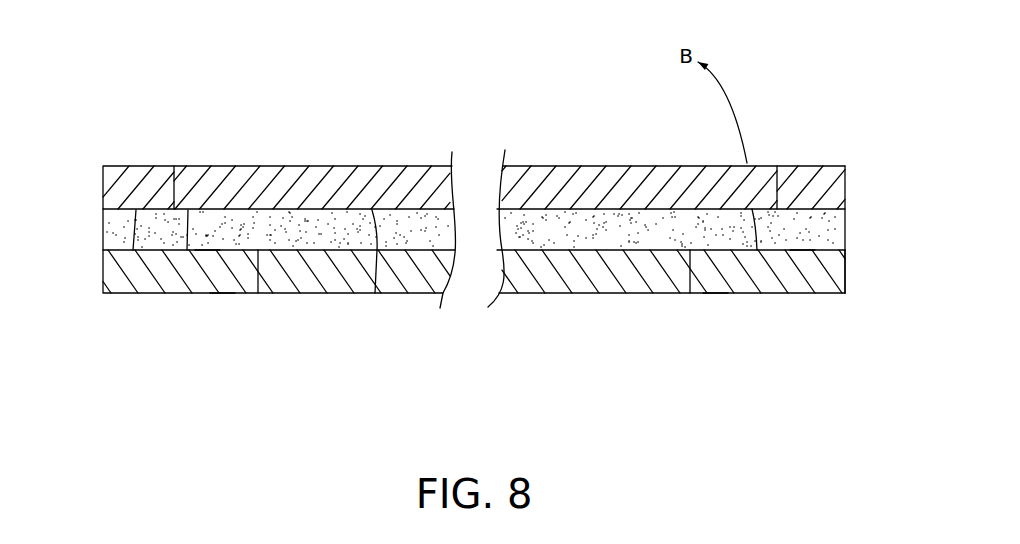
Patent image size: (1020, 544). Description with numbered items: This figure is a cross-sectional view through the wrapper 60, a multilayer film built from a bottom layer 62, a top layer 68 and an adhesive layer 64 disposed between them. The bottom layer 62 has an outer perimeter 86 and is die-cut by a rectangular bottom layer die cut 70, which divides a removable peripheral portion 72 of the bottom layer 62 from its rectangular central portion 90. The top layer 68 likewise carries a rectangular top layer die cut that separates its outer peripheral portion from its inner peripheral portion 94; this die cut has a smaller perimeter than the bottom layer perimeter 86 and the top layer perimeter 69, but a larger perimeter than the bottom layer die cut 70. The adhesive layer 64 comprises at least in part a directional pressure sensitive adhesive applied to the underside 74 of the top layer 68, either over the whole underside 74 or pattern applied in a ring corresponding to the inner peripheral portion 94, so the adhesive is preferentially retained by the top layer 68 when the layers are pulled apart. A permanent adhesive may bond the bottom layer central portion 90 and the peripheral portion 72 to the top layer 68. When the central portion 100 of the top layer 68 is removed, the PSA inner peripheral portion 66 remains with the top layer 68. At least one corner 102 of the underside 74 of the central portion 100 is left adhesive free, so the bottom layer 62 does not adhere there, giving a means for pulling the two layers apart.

The wrapper 60 is at (160, 348).
The bottom layer 62 is at (103, 265).
The adhesive layer 64 is at (103, 230).
The PSA inner peripheral portion 66 is at (207, 250).
The top layer 68 is at (103, 195).
The top layer perimeter 69 is at (845, 183).
The bottom layer die cut 70 is at (258, 266).
The peripheral portion 72 is at (222, 293).
The underside 74 is at (375, 293).
The perimeter 86 is at (846, 277).
The central portion 90 is at (575, 293).
The inner peripheral portion 94 is at (187, 250).
The central portion 100 is at (325, 165).
The corner 102 is at (767, 163).